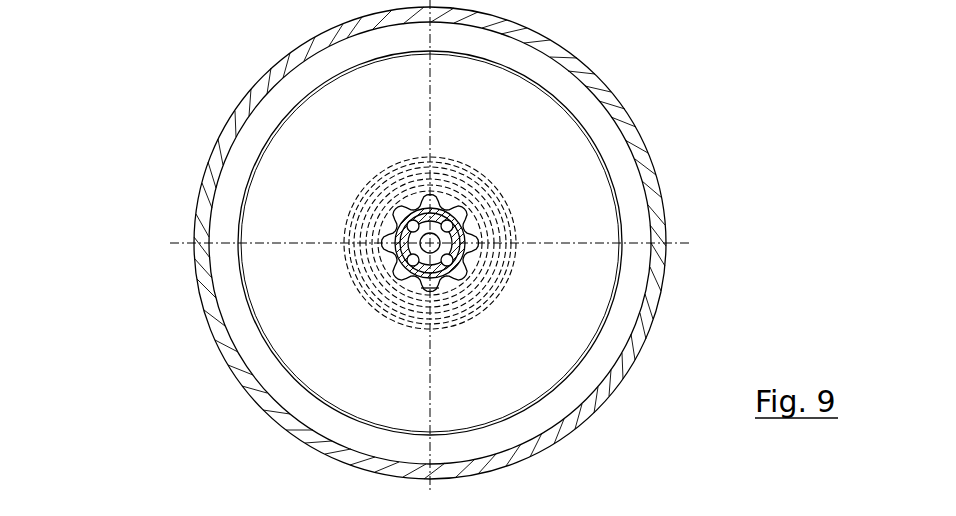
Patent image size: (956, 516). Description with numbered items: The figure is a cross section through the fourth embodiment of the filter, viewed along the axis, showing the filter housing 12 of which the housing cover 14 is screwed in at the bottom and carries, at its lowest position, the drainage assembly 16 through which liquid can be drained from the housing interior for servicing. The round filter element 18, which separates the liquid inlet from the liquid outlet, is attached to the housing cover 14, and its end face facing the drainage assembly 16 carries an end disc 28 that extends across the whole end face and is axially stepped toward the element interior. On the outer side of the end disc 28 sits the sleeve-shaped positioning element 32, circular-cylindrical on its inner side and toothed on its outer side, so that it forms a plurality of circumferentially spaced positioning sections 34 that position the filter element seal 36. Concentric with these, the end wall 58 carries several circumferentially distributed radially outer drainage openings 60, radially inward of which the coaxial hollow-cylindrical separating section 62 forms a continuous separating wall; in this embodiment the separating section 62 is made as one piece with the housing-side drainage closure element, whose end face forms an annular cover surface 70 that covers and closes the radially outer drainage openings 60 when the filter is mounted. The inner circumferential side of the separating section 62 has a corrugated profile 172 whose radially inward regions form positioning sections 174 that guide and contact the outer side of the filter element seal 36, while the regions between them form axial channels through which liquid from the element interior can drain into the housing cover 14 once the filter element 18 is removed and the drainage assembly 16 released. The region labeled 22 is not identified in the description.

The filter housing 12 is at (254, 58).
The housing cover 14 is at (196, 222).
The drainage assembly 16 is at (343, 283).
The filter element 18 is at (343, 70).
The web 22 is at (366, 145).
The end disc 28 is at (408, 244).
The positioning element 32 is at (398, 250).
The positioning sections 34 is at (410, 236).
The filter element seal 36 is at (473, 240).
The end wall 58 is at (387, 208).
The radially outer drainage openings 60 is at (460, 268).
The separating section 62 is at (418, 297).
The annular cover surface 70 is at (460, 270).
The corrugated profile 172 is at (460, 213).
The positioning sections 174 is at (467, 228).